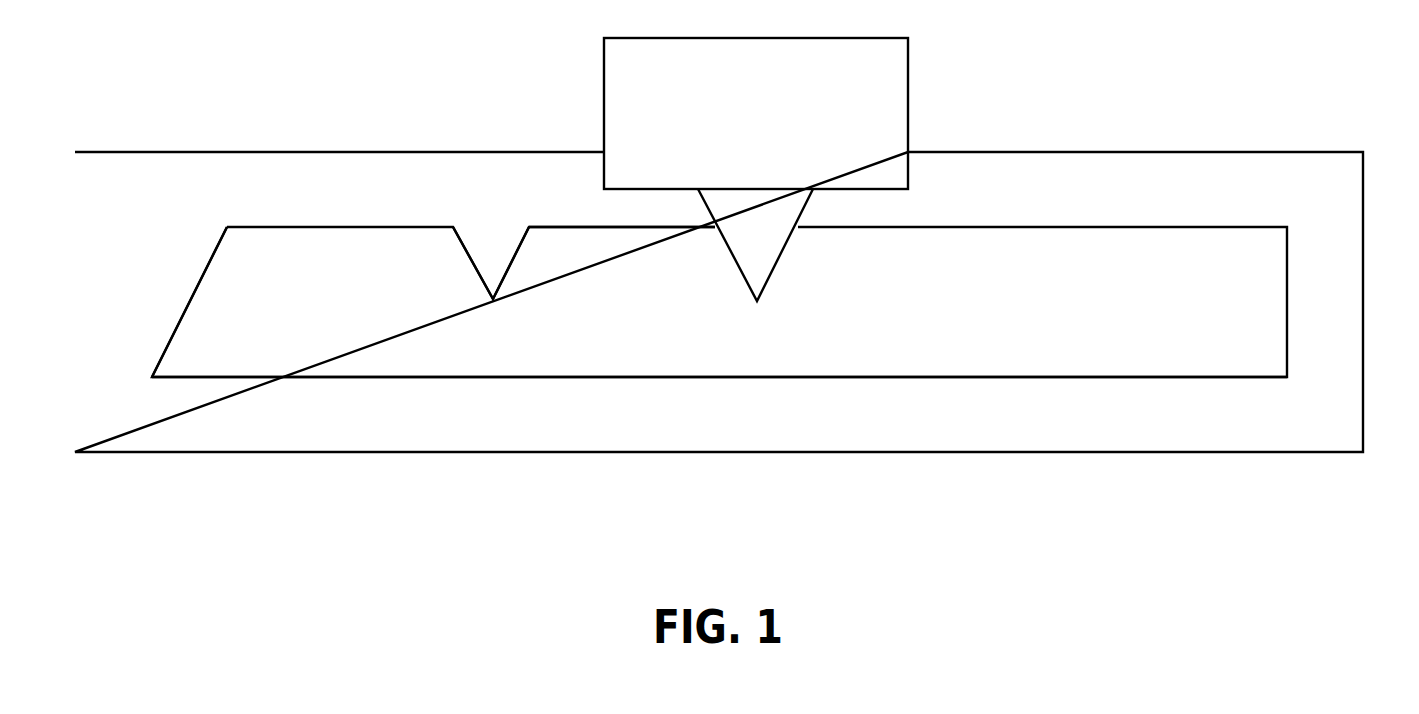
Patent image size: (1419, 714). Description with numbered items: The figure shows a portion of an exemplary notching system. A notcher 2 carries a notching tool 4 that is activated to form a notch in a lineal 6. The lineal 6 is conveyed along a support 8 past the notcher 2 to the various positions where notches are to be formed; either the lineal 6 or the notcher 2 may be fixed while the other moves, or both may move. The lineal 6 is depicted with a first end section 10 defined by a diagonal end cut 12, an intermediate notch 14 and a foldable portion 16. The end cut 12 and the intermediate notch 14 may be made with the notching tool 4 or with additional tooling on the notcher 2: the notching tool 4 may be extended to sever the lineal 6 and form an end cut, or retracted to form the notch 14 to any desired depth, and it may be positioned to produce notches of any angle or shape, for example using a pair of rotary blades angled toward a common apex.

The notcher 2 is at (862, 67).
The notching tool 4 is at (761, 220).
The lineal 6 is at (1253, 302).
The support 8 is at (1273, 172).
The first end section 10 is at (343, 225).
The diagonal end cut 12 is at (197, 262).
The intermediate notch 14 is at (493, 255).
The foldable portion 16 is at (483, 339).